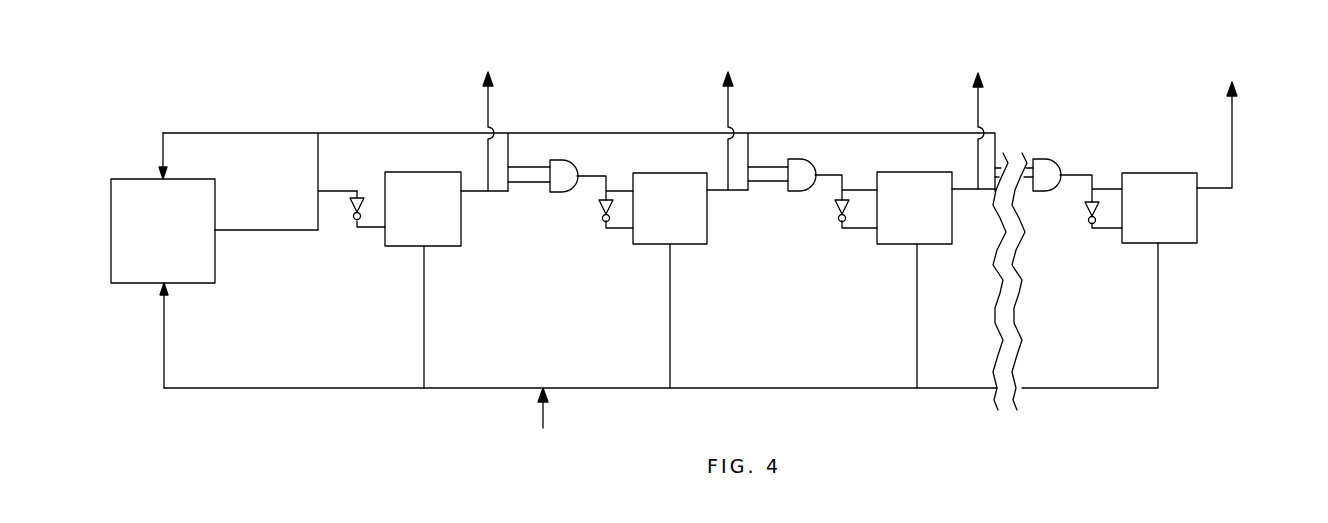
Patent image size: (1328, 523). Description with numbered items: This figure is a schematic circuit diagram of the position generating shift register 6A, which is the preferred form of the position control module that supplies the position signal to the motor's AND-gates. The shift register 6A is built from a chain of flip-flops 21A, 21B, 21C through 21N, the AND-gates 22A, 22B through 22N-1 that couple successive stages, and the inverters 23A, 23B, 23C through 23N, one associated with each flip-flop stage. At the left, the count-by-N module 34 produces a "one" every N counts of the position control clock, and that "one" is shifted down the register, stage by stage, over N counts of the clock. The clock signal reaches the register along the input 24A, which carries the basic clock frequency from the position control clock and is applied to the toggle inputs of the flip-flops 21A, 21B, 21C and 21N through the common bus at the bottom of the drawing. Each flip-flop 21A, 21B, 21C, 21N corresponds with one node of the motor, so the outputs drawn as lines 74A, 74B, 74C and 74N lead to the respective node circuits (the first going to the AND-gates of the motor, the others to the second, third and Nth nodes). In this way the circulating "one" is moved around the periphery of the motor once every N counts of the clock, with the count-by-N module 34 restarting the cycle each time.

The position generating shift register 6A is at (453, 415).
The count-by-N module 34 is at (215, 284).
The flip-flop 21A is at (422, 172).
The flip-flop 21B is at (705, 246).
The flip-flop 21C is at (878, 246).
The flip-flop 21N is at (1199, 243).
The AND-gate 22A is at (578, 165).
The AND-gate 22B is at (814, 166).
The AND-gate 22N-1 is at (1052, 160).
The inverter 23A is at (352, 208).
The inverter 23B is at (599, 208).
The inverter 23C is at (836, 210).
The inverter 23N is at (1086, 212).
The output line to AND gates 18 74A is at (490, 100).
The output line node #2 74B is at (730, 103).
The output line node #3 74C is at (980, 103).
The output line node #N 74N is at (1235, 106).
The clock output / shift register input 24A is at (546, 414).